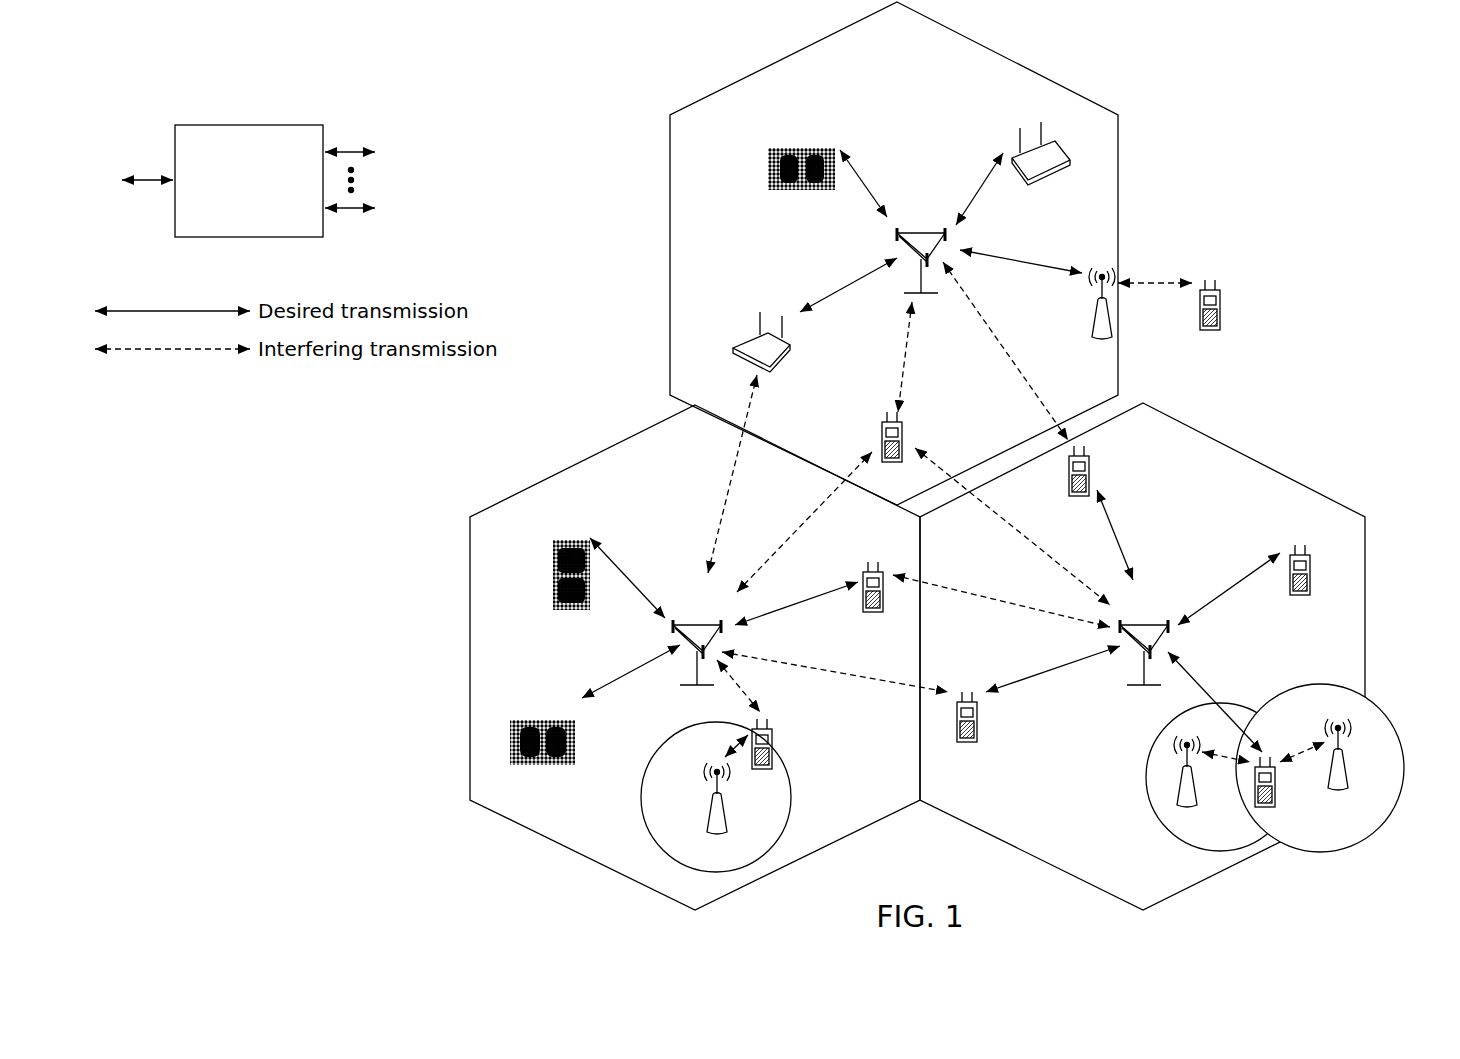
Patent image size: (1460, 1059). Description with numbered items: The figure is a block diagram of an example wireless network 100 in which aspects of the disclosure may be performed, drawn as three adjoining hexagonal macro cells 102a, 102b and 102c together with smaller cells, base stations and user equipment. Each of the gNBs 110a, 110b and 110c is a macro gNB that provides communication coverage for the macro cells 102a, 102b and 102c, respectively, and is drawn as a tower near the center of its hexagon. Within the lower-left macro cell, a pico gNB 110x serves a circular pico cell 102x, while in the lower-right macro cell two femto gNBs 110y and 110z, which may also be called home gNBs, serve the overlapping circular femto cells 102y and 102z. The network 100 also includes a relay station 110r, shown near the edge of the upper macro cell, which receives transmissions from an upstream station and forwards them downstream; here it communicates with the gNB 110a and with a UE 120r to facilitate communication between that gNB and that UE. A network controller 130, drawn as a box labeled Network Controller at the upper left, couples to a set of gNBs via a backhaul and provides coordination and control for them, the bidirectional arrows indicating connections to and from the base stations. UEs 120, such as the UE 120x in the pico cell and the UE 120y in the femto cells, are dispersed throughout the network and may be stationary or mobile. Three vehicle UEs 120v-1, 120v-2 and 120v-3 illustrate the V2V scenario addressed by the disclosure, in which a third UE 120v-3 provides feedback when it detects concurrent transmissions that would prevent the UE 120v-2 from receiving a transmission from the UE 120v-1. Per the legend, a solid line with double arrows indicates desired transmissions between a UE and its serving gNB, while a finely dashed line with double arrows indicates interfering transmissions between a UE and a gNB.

The wireless network 100 is at (1293, 87).
The macro cell 102a is at (1030, 68).
The macro cell 102b is at (590, 460).
The macro cell 102c is at (1252, 460).
The pico cell 102x is at (665, 741).
The femto cell 102y is at (1152, 745).
The femto cell 102z is at (1310, 686).
The macro gNB 110a is at (914, 231).
The macro gNB 110b is at (692, 624).
The macro gNB 110c is at (1141, 624).
The relay station 110r is at (1091, 323).
The pico gNB 110x is at (726, 820).
The femto gNB 110y is at (1196, 798).
The femto gNB 110z is at (1349, 784).
The UE 120 is at (881, 450).
The UE 120r is at (1220, 322).
The UE 120x is at (772, 745).
The UE 120y is at (1255, 800).
The UE 120v-1 is at (540, 718).
The UE 120v-2 is at (552, 544).
The UE 120v-3 is at (809, 153).
The network controller 130 is at (243, 125).